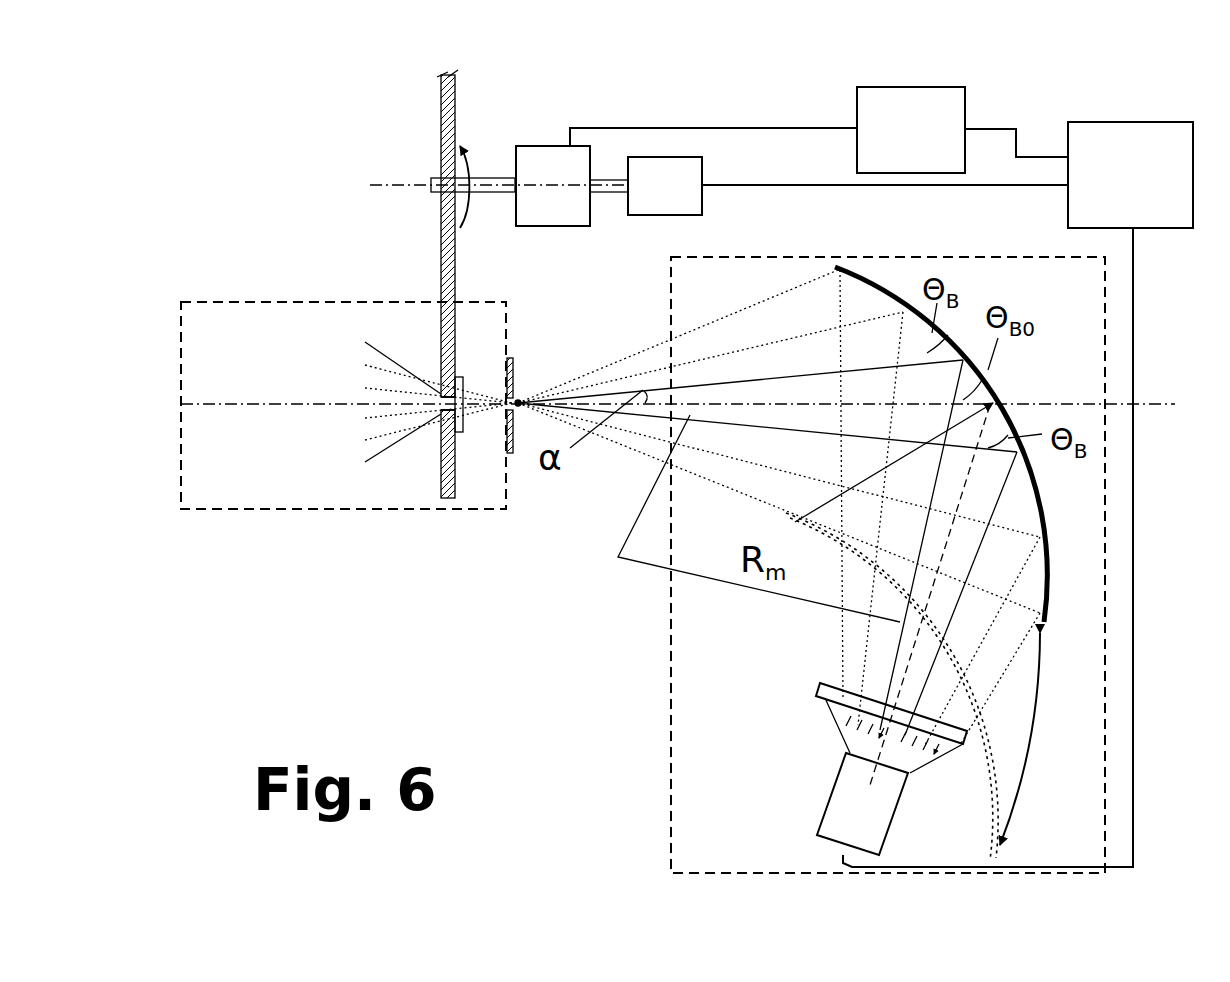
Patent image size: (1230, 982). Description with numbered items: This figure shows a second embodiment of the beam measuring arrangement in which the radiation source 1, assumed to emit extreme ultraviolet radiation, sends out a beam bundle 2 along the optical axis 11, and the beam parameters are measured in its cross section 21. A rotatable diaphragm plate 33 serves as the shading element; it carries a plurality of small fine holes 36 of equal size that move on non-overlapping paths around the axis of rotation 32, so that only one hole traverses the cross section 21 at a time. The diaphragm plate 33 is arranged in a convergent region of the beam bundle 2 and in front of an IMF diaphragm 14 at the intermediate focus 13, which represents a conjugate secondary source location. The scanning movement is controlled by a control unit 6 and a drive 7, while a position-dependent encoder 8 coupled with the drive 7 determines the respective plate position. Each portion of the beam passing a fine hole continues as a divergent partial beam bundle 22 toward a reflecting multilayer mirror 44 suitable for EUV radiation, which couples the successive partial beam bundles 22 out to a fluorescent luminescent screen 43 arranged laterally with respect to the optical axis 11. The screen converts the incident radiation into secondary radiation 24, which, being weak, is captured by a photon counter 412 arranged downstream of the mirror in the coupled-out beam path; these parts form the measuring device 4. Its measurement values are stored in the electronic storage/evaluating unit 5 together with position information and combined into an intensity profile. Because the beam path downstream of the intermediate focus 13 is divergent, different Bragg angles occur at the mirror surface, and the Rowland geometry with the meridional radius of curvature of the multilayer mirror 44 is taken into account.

The radiation source 1 is at (267, 300).
The optical axis 11 is at (270, 405).
The beam bundle 2 is at (403, 447).
The diaphragm plate 33 is at (440, 140).
The cross section 21 is at (470, 390).
The fine holes 36 is at (440, 395).
The axis of rotation 32 is at (393, 185).
The drive 7 is at (553, 160).
The position-dependent encoder 8 is at (698, 199).
The control unit 6 is at (868, 107).
The electronic storage/evaluating unit 5 is at (1155, 213).
The intermediate focus 13 is at (522, 398).
The IMF diaphragm 14 is at (505, 413).
The measuring device 4 is at (1105, 490).
The partial beam bundle 22 is at (692, 415).
The multilayer mirror 44 is at (1017, 400).
The secondary radiation 24 is at (852, 723).
The luminescent screen 43 is at (818, 688).
The photon counter 412 is at (840, 780).